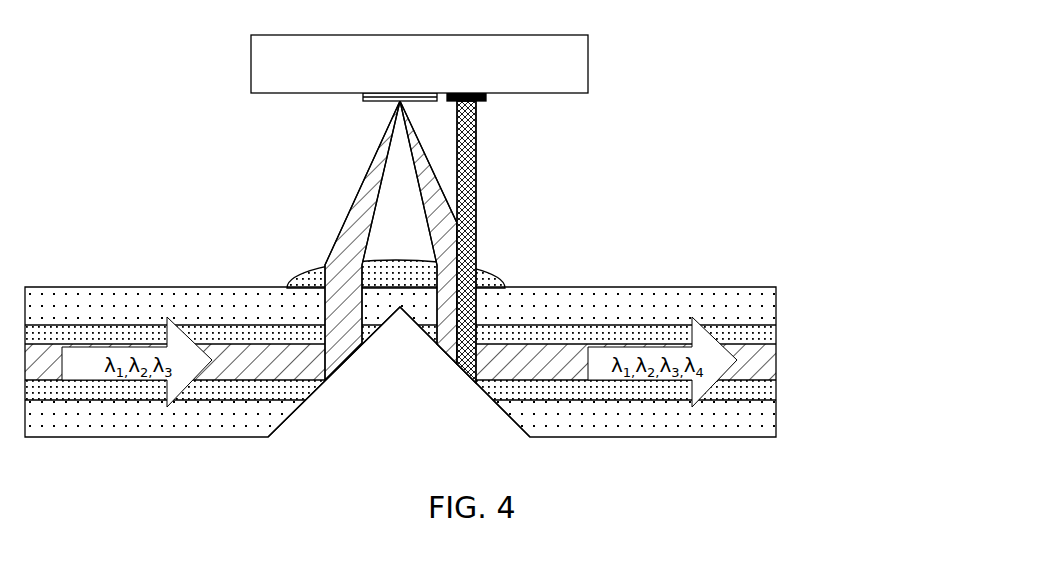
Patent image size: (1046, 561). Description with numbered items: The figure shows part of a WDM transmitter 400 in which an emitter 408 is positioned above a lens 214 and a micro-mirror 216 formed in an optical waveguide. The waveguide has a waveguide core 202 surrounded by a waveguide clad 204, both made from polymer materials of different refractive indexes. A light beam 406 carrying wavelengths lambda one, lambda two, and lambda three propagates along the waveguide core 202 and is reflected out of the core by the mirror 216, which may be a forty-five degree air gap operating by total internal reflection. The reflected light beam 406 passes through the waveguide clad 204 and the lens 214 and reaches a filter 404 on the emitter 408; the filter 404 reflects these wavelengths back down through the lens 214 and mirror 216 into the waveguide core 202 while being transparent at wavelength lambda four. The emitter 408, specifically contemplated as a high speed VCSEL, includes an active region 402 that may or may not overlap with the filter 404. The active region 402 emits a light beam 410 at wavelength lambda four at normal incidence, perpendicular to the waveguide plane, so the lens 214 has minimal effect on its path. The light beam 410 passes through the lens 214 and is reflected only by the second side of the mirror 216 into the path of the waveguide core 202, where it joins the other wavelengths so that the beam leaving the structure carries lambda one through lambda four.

The WDM transmitter 400 is at (758, 56).
The active region 402 is at (486, 98).
The filter 404 is at (373, 102).
The light beam 406 is at (776, 363).
The emitter 408 is at (251, 63).
The light beam 410 is at (476, 190).
The waveguide clad 204 is at (776, 304).
The waveguide core 202 is at (776, 392).
The lens 214 is at (497, 279).
The micro-mirror 216 is at (401, 343).